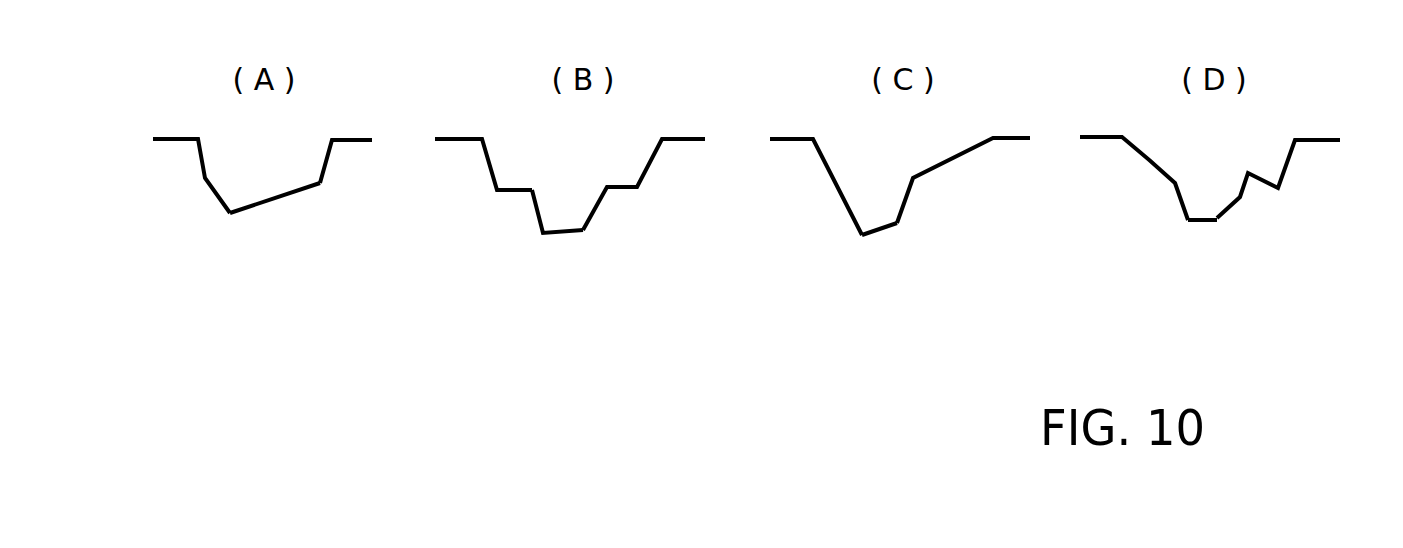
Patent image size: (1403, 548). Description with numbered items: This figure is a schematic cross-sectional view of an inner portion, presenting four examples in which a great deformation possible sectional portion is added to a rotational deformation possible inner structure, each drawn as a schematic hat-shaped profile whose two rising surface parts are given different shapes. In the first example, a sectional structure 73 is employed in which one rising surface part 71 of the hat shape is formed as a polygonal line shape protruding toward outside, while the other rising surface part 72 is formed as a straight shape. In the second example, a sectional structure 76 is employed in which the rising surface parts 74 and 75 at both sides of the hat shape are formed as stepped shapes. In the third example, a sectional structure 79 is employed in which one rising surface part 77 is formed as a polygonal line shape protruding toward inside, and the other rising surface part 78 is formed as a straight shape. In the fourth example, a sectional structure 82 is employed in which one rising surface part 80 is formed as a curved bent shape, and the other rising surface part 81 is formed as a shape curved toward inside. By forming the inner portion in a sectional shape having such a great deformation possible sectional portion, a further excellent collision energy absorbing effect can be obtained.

The rising surface part 71 is at (205, 168).
The rising surface part 72 is at (330, 167).
The sectional structure 73 is at (282, 217).
The rising surface part 74 is at (498, 177).
The rising surface part 75 is at (650, 167).
The sectional structure 76 is at (596, 243).
The rising surface part 77 is at (913, 195).
The rising surface part 78 is at (837, 190).
The sectional structure 79 is at (895, 242).
The rising surface part 80 is at (1293, 173).
The rising surface part 81 is at (1157, 167).
The sectional structure 82 is at (1220, 230).